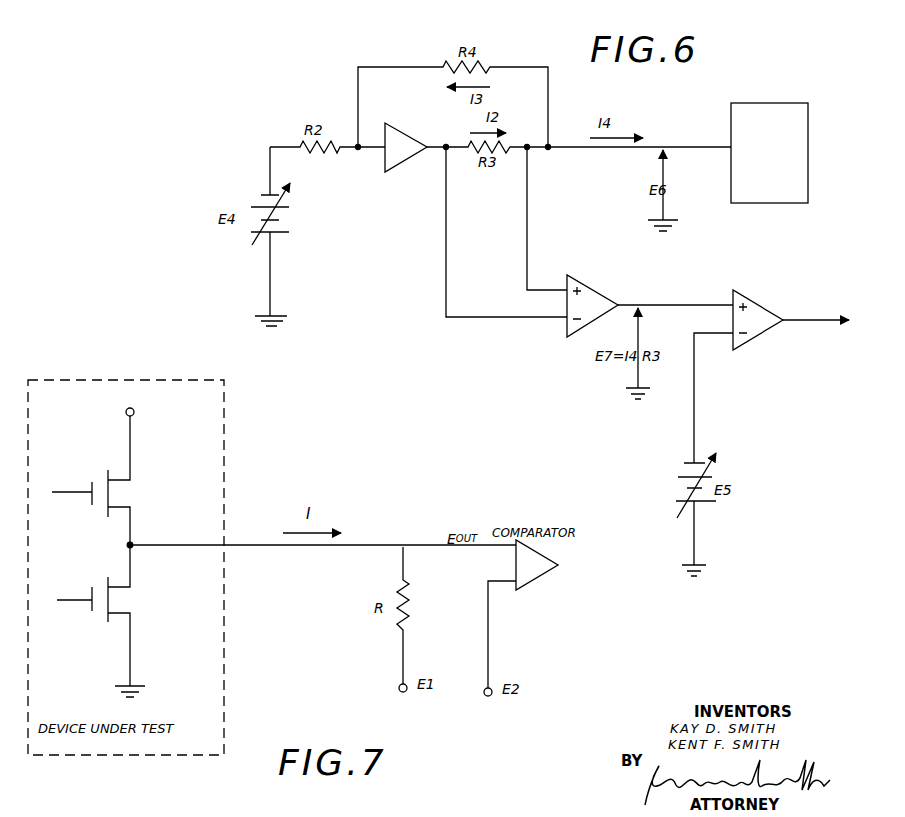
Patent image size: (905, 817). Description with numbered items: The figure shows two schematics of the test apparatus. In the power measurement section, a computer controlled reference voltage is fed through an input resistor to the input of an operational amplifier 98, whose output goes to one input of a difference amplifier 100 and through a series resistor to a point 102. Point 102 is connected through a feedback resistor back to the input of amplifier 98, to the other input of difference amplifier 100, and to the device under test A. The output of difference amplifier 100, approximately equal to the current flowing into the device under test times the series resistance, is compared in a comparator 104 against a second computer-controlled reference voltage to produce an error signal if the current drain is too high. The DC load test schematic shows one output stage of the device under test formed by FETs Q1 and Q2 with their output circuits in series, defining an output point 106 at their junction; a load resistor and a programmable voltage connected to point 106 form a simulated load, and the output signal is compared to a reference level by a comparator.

In FIG. 6, the operational amplifier 98 is at (401, 158).
In FIG. 6, the difference amplifier 100 is at (588, 296).
In FIG. 6, the point 102 is at (548, 150).
In FIG. 6, the comparator 104 is at (753, 314).
In FIG. 7, the output point 106 is at (134, 542).
In FIG. 6, the device under test A is at (768, 102).
In FIG. 7, the FET Q1 is at (118, 494).
In FIG. 7, the FET Q2 is at (121, 603).